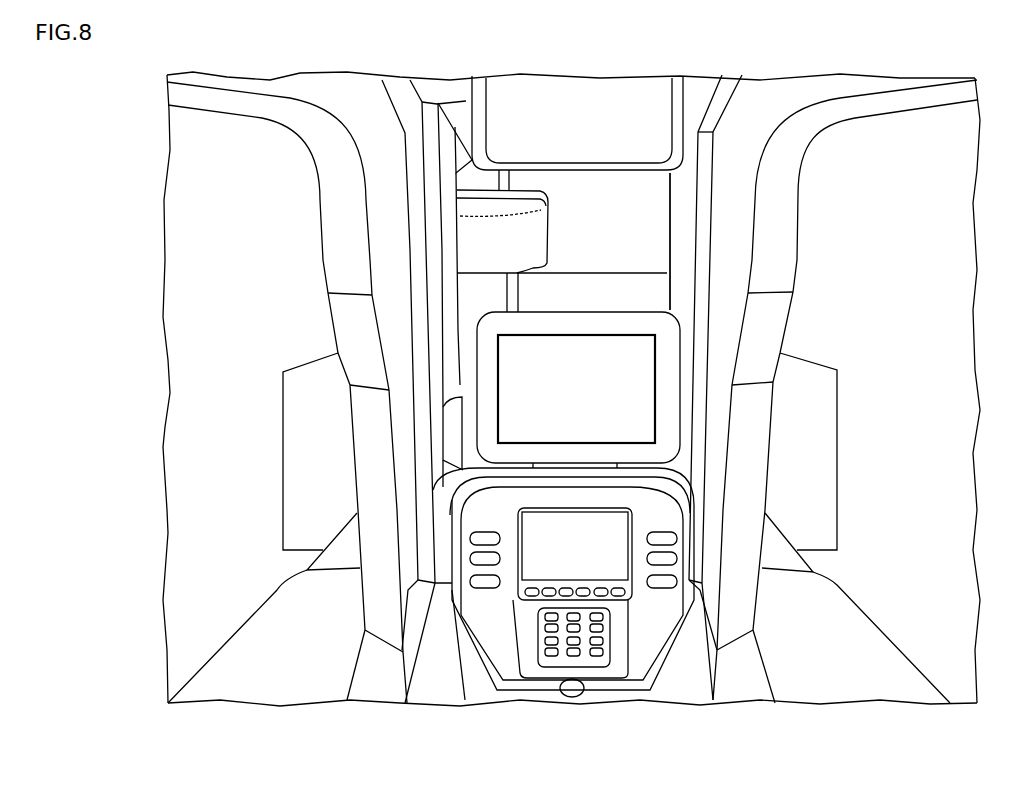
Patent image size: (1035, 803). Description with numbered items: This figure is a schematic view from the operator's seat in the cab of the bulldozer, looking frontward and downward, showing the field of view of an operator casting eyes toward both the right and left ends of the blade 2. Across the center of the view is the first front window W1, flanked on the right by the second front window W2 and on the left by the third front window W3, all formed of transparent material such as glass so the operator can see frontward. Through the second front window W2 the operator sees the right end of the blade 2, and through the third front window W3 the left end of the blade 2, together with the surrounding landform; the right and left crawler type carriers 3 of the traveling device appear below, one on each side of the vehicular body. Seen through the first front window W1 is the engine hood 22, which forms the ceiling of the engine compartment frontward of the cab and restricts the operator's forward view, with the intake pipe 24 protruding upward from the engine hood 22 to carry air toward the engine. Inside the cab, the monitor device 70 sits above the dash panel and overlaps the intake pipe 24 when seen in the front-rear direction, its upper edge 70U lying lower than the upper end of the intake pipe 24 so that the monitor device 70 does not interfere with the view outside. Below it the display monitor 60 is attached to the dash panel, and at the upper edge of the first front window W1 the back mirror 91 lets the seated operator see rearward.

The blade 2 is at (318, 450).
The crawler type carrier 3 is at (293, 672).
The engine hood 22 is at (588, 293).
The intake pipe 24 is at (489, 230).
The display monitor 60 is at (610, 550).
The monitor device 70 is at (563, 410).
The upper edge of monitor device 70U is at (640, 307).
The back mirror 91 is at (545, 127).
The first front window W1 is at (611, 220).
The second front window W2 is at (860, 180).
The third front window W3 is at (233, 180).